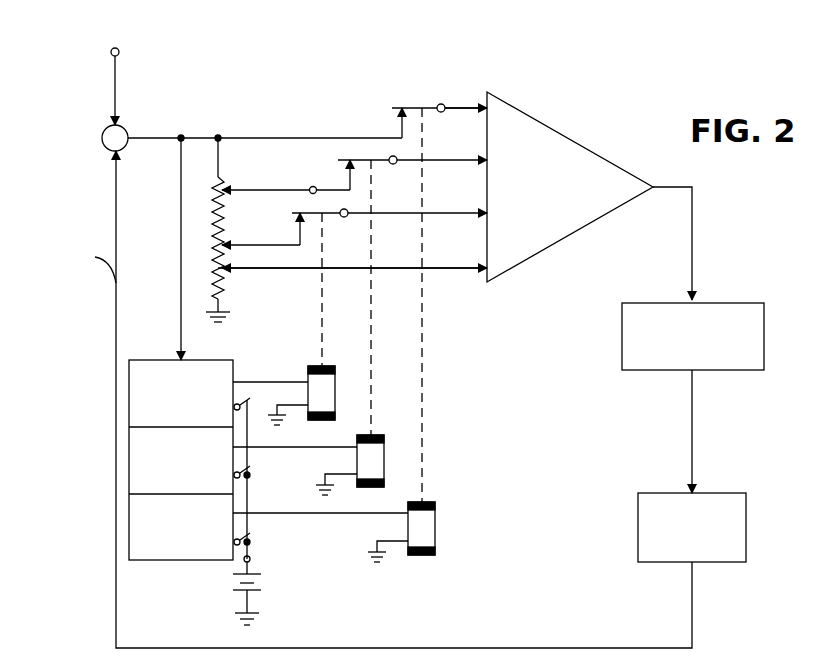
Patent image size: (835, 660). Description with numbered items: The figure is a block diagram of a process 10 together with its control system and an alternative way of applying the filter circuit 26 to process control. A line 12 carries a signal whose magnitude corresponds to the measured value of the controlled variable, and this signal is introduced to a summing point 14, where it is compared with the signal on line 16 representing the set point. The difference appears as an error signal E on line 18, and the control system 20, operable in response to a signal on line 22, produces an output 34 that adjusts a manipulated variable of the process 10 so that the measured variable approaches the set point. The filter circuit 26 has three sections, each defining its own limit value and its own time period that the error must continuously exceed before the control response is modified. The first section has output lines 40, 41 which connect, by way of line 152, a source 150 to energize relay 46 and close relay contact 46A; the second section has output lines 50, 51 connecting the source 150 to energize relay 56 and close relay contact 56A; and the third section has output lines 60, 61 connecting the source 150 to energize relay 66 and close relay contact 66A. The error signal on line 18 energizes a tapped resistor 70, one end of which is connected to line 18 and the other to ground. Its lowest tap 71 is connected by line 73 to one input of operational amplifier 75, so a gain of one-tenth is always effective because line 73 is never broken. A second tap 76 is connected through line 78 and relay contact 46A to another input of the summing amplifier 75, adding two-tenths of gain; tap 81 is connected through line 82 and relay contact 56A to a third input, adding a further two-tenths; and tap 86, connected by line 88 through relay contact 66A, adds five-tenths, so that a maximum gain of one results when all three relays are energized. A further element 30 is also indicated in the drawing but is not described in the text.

The process 10 is at (638, 525).
The line 12 is at (116, 190).
The summing point 14 is at (105, 128).
The line 16 is at (118, 84).
The line 18 is at (157, 137).
The control system 20 is at (622, 325).
The line 22 is at (692, 255).
The filter circuit 26 is at (155, 358).
The filter circuit input line 30 is at (181, 248).
The output 34 is at (692, 420).
The output line 40 is at (246, 403).
The output line 41 is at (286, 381).
The relay 46 is at (336, 392).
The relay contact 46A is at (376, 207).
The output line 50 is at (245, 471).
The output line 51 is at (322, 447).
The relay 56 is at (385, 462).
The relay contact 56A is at (345, 159).
The output line 60 is at (246, 539).
The output line 61 is at (375, 514).
The relay 66 is at (436, 528).
The relay contact 66A is at (410, 107).
The tapped resistor 70 is at (213, 224).
The lowest tap 71 is at (222, 270).
The line 73 is at (460, 268).
The operational amplifier 75 is at (571, 138).
The second tap 76 is at (222, 243).
The line 78 is at (282, 246).
The tap 81 is at (222, 188).
The line 82 is at (311, 187).
The tap 86 is at (220, 136).
The line 88 is at (461, 108).
The source 150 is at (258, 590).
The line 152 is at (252, 559).